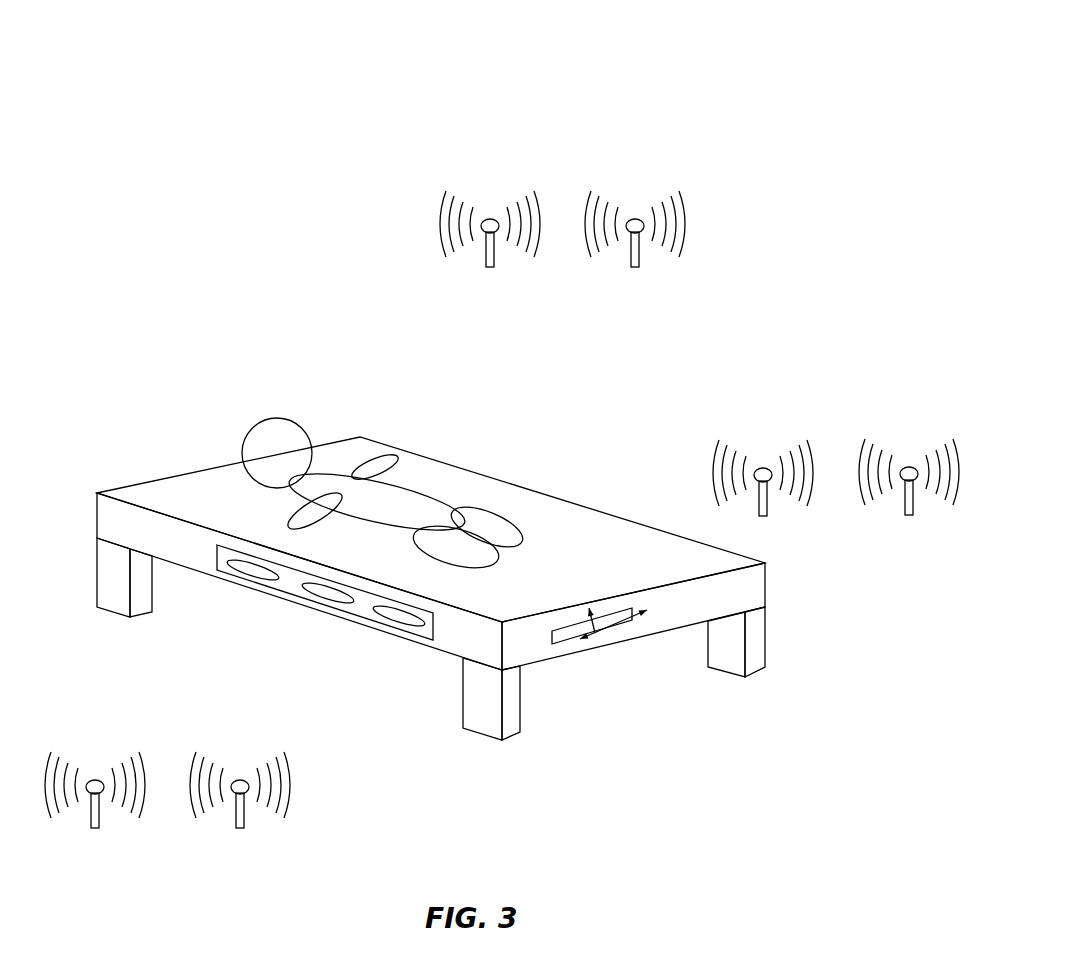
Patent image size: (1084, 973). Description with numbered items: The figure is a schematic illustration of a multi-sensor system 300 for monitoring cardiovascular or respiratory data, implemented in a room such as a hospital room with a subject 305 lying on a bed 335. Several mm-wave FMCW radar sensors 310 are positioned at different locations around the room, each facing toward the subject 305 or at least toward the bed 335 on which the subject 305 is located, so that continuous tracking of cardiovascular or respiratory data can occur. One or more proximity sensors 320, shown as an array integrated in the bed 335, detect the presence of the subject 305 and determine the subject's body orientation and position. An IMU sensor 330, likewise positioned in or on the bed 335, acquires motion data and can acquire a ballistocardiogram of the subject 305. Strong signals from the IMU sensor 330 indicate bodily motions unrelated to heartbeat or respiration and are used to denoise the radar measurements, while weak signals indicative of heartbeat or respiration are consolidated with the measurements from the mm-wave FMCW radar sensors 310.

The multi-sensor system 300 is at (214, 97).
The subject 305 is at (268, 420).
The mm-wave FMCW radar sensors 310 is at (491, 219).
The proximity sensors 320 is at (215, 558).
The IMU sensor 330 is at (613, 640).
The bed 335 is at (478, 473).